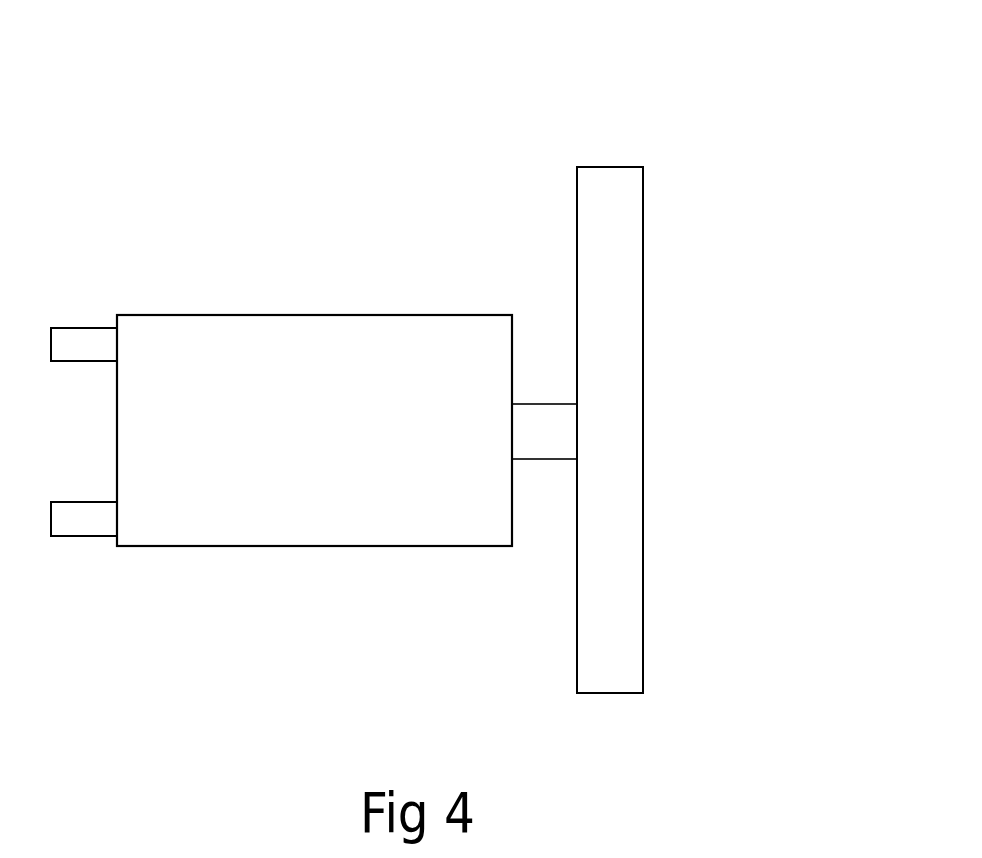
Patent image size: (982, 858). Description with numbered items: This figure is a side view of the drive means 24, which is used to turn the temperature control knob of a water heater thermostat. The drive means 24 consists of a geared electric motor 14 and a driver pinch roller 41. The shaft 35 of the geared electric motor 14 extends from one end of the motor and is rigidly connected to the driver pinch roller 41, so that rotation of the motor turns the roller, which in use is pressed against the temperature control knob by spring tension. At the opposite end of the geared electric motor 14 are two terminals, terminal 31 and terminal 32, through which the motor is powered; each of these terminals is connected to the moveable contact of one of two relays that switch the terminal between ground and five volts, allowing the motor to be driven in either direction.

The drive means 24 is at (118, 43).
The geared electric motor 14 is at (314, 374).
The terminal 31 is at (118, 266).
The terminal 32 is at (137, 594).
The shaft 35 is at (497, 564).
The driver pinch roller 41 is at (537, 368).